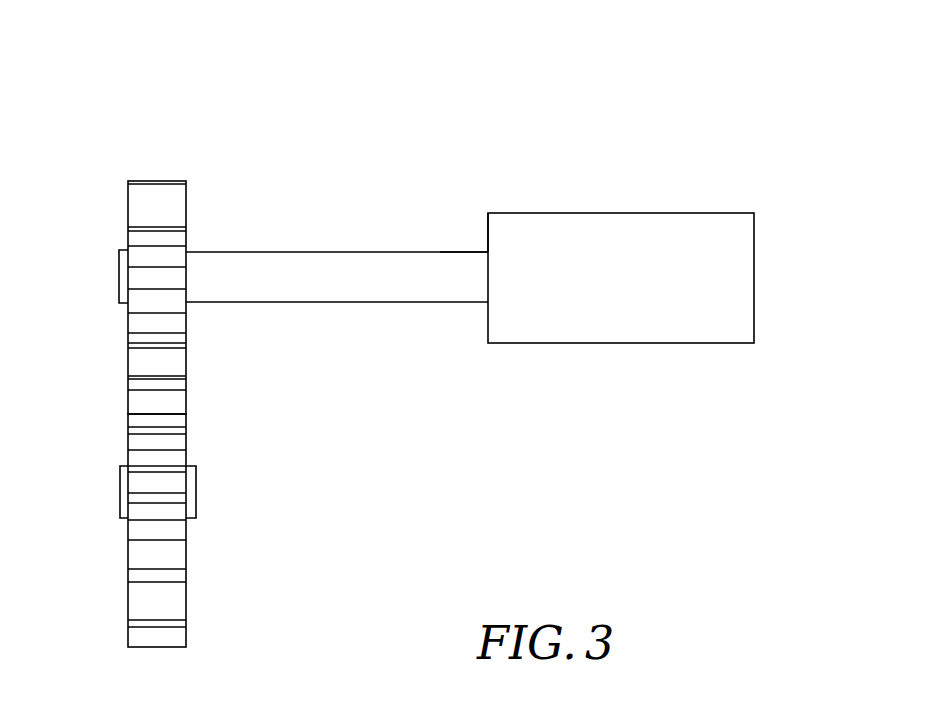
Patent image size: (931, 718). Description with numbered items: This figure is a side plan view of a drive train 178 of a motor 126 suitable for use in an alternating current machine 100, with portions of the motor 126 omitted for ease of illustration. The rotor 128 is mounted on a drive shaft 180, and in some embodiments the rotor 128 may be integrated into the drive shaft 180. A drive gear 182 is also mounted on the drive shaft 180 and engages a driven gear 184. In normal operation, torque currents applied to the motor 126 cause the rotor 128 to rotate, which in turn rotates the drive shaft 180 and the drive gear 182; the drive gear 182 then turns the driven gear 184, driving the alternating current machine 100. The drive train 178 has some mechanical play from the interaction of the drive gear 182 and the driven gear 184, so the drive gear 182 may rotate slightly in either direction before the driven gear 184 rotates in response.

The alternating current machine 100 is at (596, 102).
The motor 126 is at (797, 275).
The rotor 128 is at (642, 286).
The drive train 178 is at (435, 220).
The drive shaft 180 is at (268, 252).
The drive gear 182 is at (128, 221).
The driven gear 184 is at (128, 555).